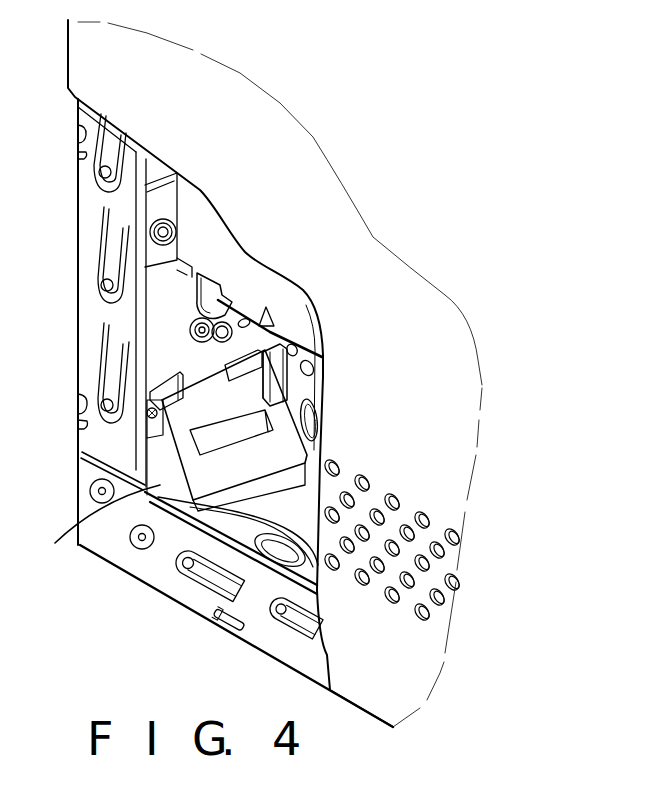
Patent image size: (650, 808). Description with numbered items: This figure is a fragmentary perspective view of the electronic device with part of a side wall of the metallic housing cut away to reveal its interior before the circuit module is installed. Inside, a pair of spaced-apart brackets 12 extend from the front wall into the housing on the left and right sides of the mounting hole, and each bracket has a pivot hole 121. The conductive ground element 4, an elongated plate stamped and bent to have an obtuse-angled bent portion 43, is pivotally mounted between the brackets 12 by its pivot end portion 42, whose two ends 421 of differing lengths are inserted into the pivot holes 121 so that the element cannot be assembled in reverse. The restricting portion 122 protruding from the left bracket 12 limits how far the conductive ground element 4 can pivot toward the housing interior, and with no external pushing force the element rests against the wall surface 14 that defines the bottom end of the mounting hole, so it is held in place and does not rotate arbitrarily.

The conductive ground element 4 is at (315, 426).
The brackets 12 is at (270, 360).
The restricting portion 122 is at (283, 383).
The pivot end portion 42 is at (212, 397).
The pivot hole 121 is at (150, 392).
The ends 421 is at (150, 415).
The bent portion 43 is at (92, 525).
The wall surface 14 is at (247, 510).